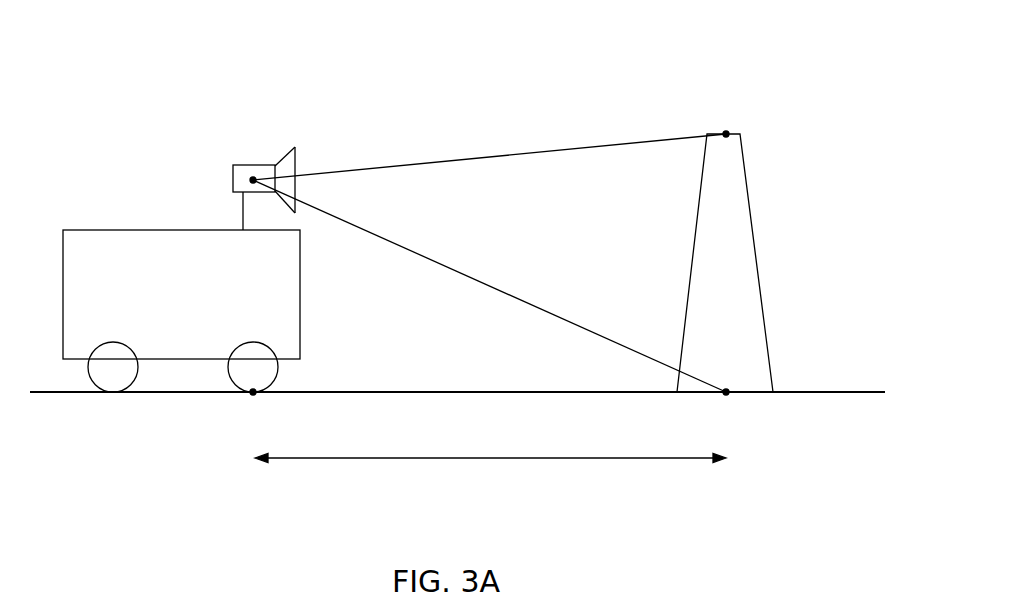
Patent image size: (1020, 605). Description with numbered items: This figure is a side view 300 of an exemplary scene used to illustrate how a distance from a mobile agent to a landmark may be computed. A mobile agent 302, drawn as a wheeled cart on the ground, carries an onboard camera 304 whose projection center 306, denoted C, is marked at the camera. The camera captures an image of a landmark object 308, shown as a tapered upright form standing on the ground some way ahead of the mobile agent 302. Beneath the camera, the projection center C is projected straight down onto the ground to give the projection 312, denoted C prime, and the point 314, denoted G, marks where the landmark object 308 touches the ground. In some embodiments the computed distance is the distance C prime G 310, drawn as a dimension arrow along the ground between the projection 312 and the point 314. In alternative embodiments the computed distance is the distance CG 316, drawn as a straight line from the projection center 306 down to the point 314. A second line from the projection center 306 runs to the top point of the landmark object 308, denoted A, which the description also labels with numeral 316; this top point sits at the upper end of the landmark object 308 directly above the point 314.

The side view 300 is at (798, 49).
The mobile agent 302 is at (86, 218).
The onboard camera 304 is at (221, 163).
The projection center 306 is at (263, 165).
The landmark object 308 is at (760, 172).
The distance C'G 310 is at (578, 473).
The projection C' 312 is at (265, 408).
The point G 314 is at (737, 408).
The distance CG 316 is at (733, 123).